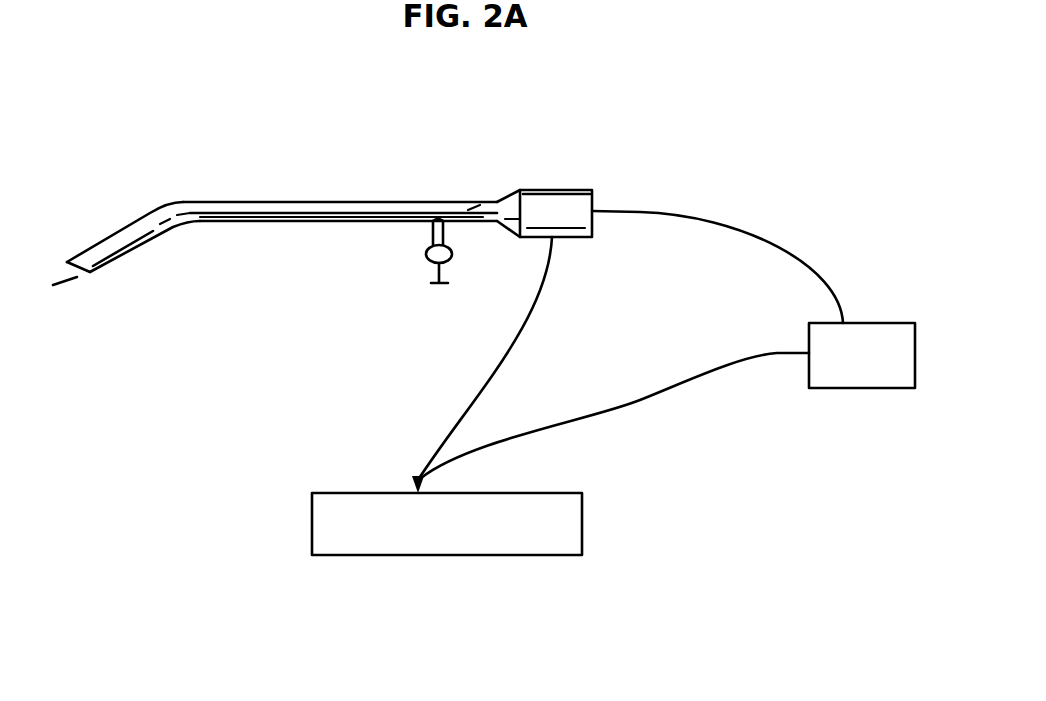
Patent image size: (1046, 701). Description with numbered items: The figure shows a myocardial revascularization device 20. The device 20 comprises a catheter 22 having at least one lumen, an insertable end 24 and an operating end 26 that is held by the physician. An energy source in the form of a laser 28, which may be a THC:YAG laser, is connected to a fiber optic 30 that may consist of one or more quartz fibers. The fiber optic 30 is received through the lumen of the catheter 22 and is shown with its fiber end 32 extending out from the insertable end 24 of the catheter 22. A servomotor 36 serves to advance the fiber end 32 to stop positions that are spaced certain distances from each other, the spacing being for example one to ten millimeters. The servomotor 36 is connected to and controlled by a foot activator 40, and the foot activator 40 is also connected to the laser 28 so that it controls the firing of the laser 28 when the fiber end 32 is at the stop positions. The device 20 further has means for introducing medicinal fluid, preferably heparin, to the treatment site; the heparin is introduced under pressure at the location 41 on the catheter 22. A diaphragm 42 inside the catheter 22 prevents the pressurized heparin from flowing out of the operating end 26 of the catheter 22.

The device 20 is at (317, 265).
The catheter 22 is at (302, 202).
The insertable end 24 is at (123, 250).
The operating end 26 is at (443, 202).
The laser 28 is at (858, 388).
The fiber optic 30 is at (790, 243).
The fiber end 32 is at (72, 276).
The servomotor 36 is at (583, 189).
The foot activator 40 is at (582, 522).
The pressurized heparin introduction 41 is at (430, 243).
The diaphragm 42 is at (477, 193).